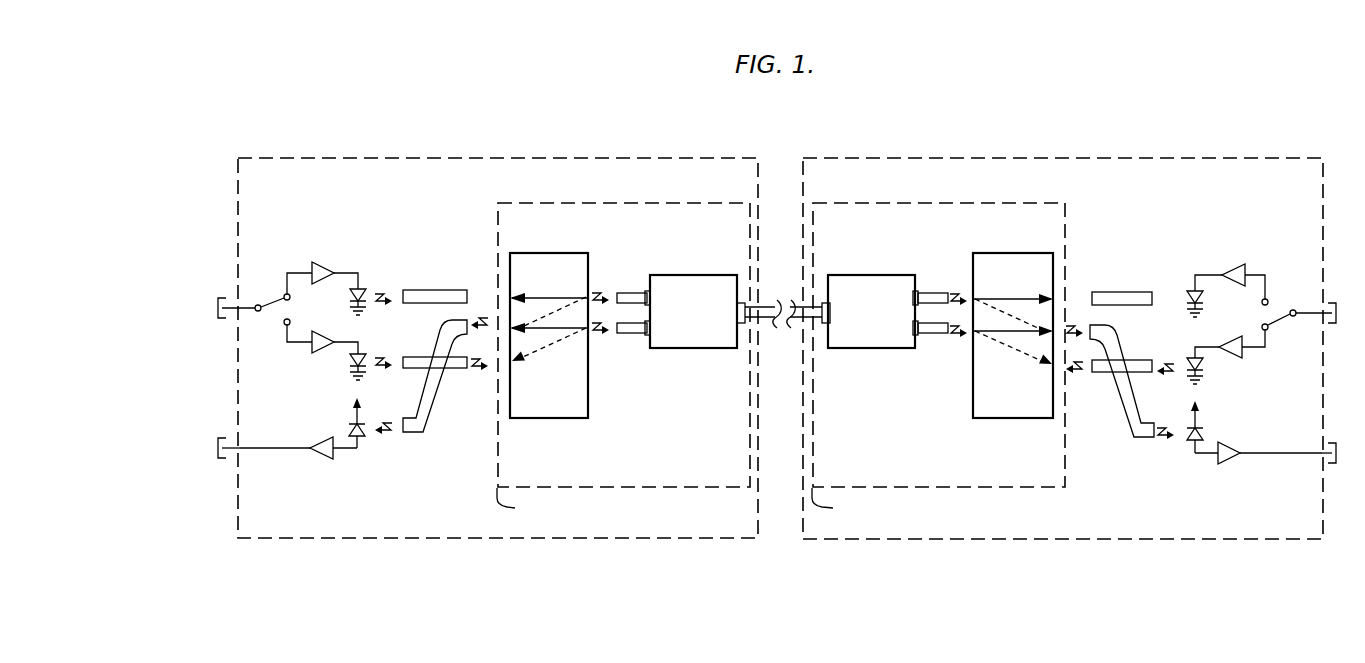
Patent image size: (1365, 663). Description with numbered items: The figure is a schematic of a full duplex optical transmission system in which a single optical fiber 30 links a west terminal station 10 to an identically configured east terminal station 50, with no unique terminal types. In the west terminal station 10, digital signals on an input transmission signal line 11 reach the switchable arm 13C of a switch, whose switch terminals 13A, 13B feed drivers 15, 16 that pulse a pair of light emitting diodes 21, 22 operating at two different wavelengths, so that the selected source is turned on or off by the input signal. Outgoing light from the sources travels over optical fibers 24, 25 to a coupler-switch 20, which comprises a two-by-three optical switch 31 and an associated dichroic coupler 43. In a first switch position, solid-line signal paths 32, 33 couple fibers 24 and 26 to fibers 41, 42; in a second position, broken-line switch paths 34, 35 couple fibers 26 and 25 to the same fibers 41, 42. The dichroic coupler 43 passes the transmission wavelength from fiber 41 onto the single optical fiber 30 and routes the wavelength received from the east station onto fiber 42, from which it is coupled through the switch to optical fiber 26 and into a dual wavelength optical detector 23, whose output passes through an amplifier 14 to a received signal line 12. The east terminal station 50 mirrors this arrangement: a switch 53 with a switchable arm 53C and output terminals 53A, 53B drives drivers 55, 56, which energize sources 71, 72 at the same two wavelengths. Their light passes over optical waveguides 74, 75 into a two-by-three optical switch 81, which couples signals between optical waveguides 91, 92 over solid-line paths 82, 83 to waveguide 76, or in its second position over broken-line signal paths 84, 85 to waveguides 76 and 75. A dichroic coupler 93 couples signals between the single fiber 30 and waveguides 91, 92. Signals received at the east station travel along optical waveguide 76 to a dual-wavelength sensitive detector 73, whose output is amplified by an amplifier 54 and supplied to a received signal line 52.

The west terminal station 10 is at (672, 157).
The input transmission signal line 11 is at (261, 311).
The received signal line 12 is at (272, 447).
The switch terminal 13A is at (292, 297).
The switch terminal 13B is at (286, 324).
The switchable arm 13C is at (272, 295).
The amplifier 14 is at (323, 459).
The driver 15 is at (319, 264).
The driver 16 is at (324, 353).
The coupler-switch 20 is at (497, 456).
The light emitting diode 21 is at (360, 286).
The light emitting diode 22 is at (376, 346).
The optical detector 23 is at (350, 428).
The optical fiber 24 is at (440, 290).
The optical fiber 25 is at (415, 356).
The optical fiber 26 is at (418, 430).
The optical fiber 30 is at (797, 322).
The 2×3 optical switch 31 is at (588, 256).
The signal path 32 is at (554, 298).
The signal path 33 is at (541, 336).
The switch path 34 is at (543, 293).
The switch path 35 is at (558, 337).
The optical fiber 41 is at (636, 293).
The optical fiber 42 is at (632, 333).
The dichroic coupler 43 is at (697, 275).
The east terminal station 50 is at (1237, 157).
The received signal line 52 is at (1304, 452).
The switch 53 is at (1314, 303).
The output terminal 53A is at (1268, 298).
The output terminal 53B is at (1264, 325).
The switchable arm 53C is at (1276, 324).
The amplifier 54 is at (1236, 463).
The driver 55 is at (1226, 262).
The driver 56 is at (1233, 358).
The source 71 is at (1192, 298).
The source 72 is at (1209, 372).
The dual-wavelength sensitive detector 73 is at (1203, 431).
The optical waveguide 74 is at (1120, 292).
The optical waveguide 75 is at (1137, 360).
The optical waveguide 76 is at (1121, 408).
The 2×3 optical switch 81 is at (972, 400).
The path 82 is at (1003, 300).
The path 83 is at (1003, 333).
The signal path 84 is at (1017, 318).
The signal path 85 is at (1024, 349).
The optical waveguide 91 is at (933, 293).
The optical waveguide 92 is at (935, 333).
The dichroic coupler 93 is at (873, 275).